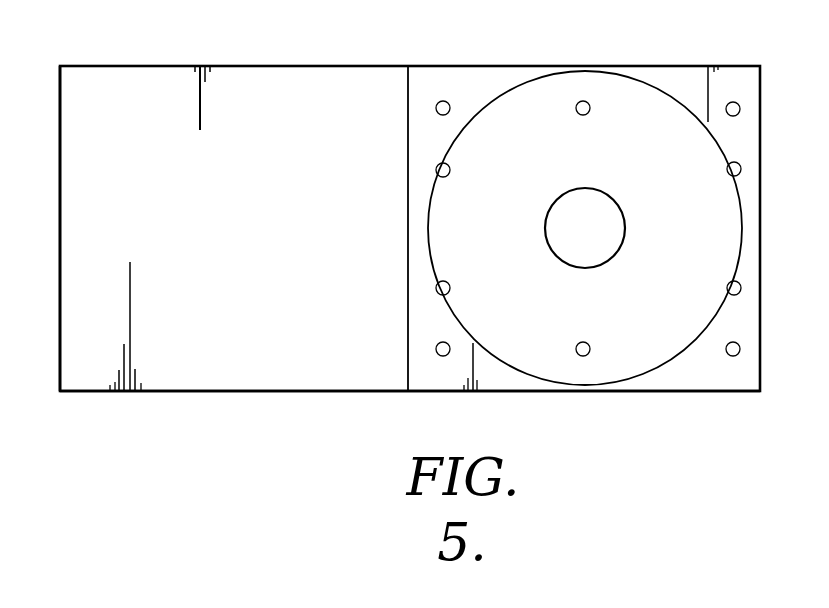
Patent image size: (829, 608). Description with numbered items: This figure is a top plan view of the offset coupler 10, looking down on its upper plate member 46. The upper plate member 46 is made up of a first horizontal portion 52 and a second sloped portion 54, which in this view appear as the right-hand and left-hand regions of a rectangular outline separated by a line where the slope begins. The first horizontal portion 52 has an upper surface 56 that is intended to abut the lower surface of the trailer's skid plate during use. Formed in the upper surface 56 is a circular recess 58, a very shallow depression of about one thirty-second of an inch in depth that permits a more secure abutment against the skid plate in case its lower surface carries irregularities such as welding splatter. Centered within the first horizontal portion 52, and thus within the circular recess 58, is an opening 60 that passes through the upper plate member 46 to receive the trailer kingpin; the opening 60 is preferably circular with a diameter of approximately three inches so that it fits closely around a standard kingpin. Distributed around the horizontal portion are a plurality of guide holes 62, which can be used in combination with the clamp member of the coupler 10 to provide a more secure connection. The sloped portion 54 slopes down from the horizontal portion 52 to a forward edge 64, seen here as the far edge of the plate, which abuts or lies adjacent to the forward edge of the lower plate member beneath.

The coupler 10 is at (306, 75).
The upper plate member 46 is at (394, 77).
The first horizontal portion 52 is at (693, 378).
The second sloped portion 54 is at (320, 377).
The upper surface 56 is at (497, 73).
The circular recess 58 is at (646, 90).
The opening 60 is at (622, 226).
The guide holes 62 is at (445, 170).
The forward edge 64 is at (60, 228).